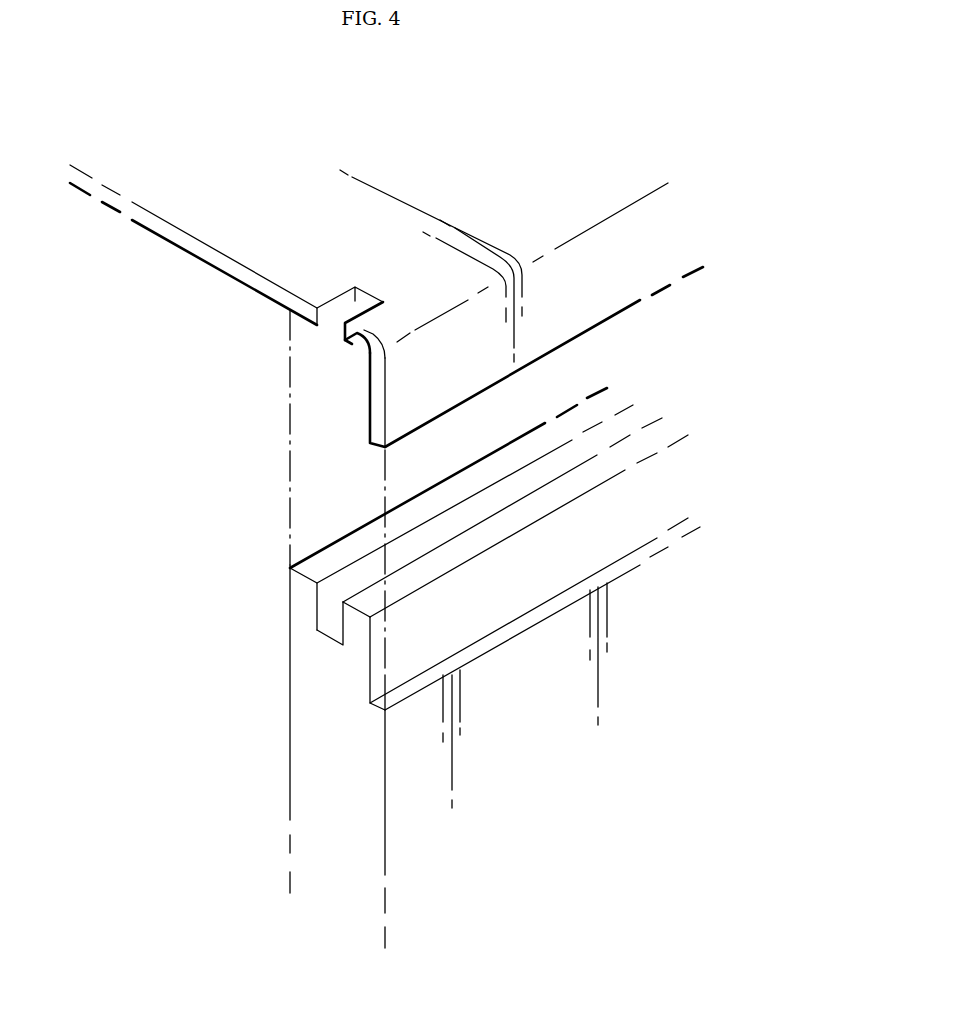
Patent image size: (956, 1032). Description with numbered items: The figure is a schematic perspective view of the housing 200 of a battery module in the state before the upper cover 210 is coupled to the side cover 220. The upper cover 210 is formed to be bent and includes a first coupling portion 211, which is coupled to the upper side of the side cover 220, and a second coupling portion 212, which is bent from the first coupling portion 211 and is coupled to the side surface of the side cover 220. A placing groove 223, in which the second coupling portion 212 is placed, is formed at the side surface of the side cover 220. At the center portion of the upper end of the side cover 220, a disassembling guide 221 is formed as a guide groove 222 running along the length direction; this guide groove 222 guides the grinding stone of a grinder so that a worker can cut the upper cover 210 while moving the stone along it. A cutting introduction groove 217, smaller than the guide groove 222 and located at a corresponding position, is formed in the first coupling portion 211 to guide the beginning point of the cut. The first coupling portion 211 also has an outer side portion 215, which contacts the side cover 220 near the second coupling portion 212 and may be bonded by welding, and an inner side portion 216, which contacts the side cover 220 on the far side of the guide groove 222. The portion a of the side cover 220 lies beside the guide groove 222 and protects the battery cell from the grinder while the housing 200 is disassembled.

The housing 200 is at (259, 120).
The upper cover 210 is at (112, 348).
The first coupling portion 211 is at (189, 291).
The second coupling portion 212 is at (608, 298).
The outer side portion 215 is at (377, 326).
The inner side portion 216 is at (313, 293).
The cutting introduction groove 217 is at (338, 308).
The side cover 220 is at (312, 732).
The disassembling guide 221 is at (203, 646).
The guide groove 222 is at (333, 610).
The placing groove 223 is at (405, 660).
The portion of the side cover a is at (302, 590).